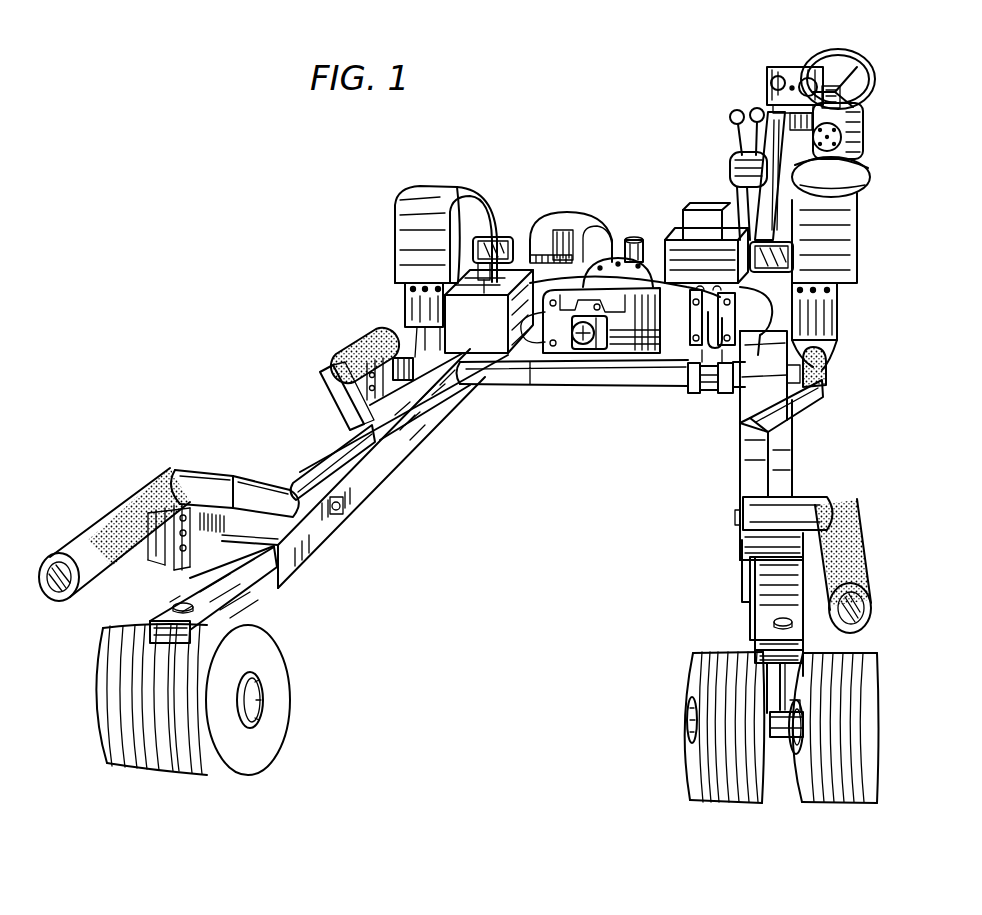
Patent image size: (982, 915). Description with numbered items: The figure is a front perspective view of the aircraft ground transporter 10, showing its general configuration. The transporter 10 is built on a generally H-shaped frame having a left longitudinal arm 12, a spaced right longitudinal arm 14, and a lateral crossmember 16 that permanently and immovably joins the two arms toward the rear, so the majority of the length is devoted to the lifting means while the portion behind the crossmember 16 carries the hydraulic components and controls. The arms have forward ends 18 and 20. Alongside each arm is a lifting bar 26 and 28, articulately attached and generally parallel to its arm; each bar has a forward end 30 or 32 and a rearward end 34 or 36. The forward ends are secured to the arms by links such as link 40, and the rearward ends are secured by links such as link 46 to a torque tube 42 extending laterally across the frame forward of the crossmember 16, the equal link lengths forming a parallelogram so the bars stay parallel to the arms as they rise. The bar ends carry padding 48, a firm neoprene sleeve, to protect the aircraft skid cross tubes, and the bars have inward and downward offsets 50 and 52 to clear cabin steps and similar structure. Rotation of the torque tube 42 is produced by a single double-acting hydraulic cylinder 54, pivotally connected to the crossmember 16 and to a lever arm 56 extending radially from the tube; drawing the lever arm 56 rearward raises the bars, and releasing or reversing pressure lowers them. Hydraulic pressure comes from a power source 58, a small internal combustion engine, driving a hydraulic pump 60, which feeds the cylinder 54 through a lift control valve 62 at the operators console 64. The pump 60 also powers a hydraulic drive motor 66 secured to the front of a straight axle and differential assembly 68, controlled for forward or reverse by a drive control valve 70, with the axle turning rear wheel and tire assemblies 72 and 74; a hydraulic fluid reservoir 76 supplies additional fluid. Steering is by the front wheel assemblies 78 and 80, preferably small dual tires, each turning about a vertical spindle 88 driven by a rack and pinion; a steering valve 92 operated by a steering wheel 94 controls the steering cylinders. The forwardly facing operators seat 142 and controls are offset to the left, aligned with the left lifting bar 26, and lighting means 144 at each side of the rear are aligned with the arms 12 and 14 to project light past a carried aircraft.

The transporter 10 is at (336, 192).
The left longitudinal arm 12 is at (795, 460).
The right longitudinal arm 14 is at (383, 482).
The lateral crossmember 16 is at (532, 384).
The forward end of left arm 18 is at (748, 573).
The forward end of right arm 20 is at (282, 588).
The left lifting bar 26 is at (832, 493).
The right lifting bar 28 is at (195, 468).
The forward end of left lifting bar 30 is at (860, 530).
The forward end of right lifting bar 32 is at (115, 506).
The rearward end of left lifting bar 34 is at (825, 392).
The rearward end of right lifting bar 36 is at (355, 350).
The link 40 is at (238, 480).
The torque tube 42 is at (582, 370).
The link 46 is at (395, 355).
The padding 48 is at (160, 472).
The inward and downward offset 50 is at (738, 465).
The inward and downward offset 52 is at (330, 452).
The hydraulic lift cylinder 54 is at (700, 342).
The lever arm 56 is at (660, 385).
The power source 58 is at (556, 220).
The hydraulic pump 60 is at (678, 238).
The lift control valve 62 is at (742, 148).
The operators console 64 is at (730, 172).
The hydraulic drive motor 66 is at (598, 350).
The axle and differential assembly 68 is at (633, 235).
The drive control valve 70 is at (738, 110).
The left rear wheel and tire assembly 72 is at (840, 334).
The right rear wheel and tire assembly 74 is at (440, 390).
The hydraulic fluid reservoir 76 is at (484, 335).
The left front wheel assembly 78 is at (752, 648).
The right front wheel assembly 80 is at (160, 618).
The vertical spindle 88 is at (800, 652).
The steering valve 92 is at (858, 122).
The steering wheel 94 is at (812, 55).
The operators seat 142 is at (862, 170).
The lighting means 144 is at (465, 248).